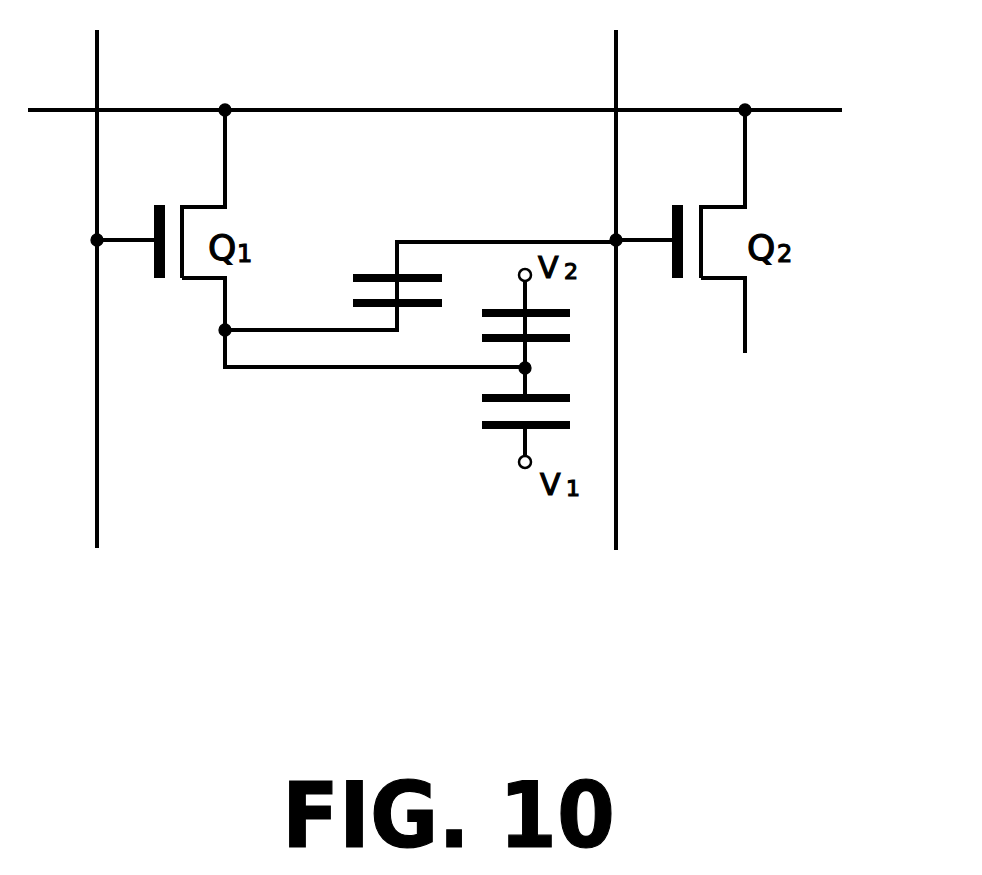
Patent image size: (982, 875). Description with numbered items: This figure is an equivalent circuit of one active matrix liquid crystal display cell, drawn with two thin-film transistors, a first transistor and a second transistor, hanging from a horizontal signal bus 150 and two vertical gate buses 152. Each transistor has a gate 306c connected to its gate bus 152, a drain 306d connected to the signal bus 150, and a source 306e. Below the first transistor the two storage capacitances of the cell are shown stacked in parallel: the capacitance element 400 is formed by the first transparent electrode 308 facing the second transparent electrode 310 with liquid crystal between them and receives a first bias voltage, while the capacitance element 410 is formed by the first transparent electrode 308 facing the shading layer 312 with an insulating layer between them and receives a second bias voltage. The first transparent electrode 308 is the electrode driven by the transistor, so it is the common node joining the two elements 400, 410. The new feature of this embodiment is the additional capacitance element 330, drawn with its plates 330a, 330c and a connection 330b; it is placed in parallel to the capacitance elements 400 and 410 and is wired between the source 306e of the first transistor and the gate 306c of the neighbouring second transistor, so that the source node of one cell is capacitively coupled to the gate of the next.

The signal bus 150 is at (800, 110).
The gate bus 152 is at (97, 60).
The gate 306c is at (154, 226).
The drain 306d is at (225, 192).
The source 306e is at (223, 330).
The additional capacitance element 330 is at (420, 233).
The capacitor lower plate 330a is at (368, 307).
The capacitor connection 330b is at (440, 290).
The capacitor upper plate 330c is at (365, 274).
The shading layer 312 is at (482, 314).
The first transparent electrode 308 is at (553, 343).
The second transparent electrode 310 is at (497, 430).
The capacitance element 410 is at (544, 366).
The capacitance element 400 is at (585, 467).